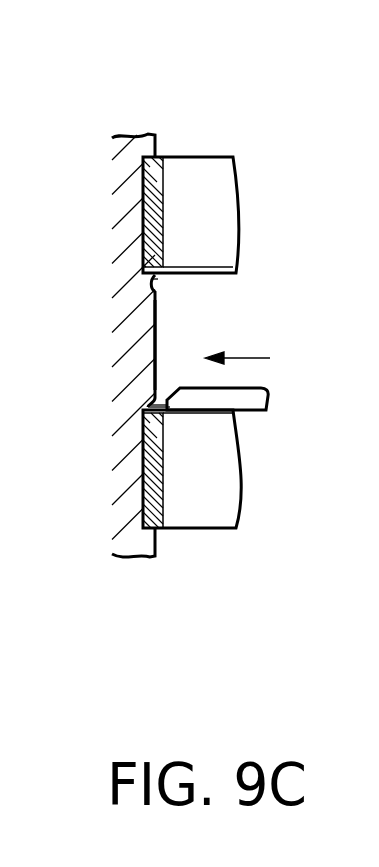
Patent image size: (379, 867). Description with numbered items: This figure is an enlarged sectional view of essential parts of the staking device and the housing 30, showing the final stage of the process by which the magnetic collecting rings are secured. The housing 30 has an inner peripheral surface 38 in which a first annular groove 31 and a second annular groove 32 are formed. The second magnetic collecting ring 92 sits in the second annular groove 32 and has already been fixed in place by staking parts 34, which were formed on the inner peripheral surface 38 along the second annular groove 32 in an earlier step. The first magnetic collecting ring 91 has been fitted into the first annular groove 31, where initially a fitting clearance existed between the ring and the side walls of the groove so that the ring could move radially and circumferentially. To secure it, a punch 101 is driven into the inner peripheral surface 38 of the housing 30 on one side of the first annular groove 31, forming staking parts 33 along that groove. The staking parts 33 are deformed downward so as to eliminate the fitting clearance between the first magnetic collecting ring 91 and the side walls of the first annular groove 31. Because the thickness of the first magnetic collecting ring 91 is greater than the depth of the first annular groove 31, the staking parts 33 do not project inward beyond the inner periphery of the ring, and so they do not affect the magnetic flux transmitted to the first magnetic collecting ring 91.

The housing 30 is at (133, 565).
The first annular groove 31 is at (150, 478).
The second annular groove 32 is at (152, 219).
The staking parts 33 is at (157, 405).
The staking parts 34 is at (153, 280).
The inner peripheral surface 38 is at (157, 333).
The first magnetic collecting ring 91 is at (222, 528).
The second magnetic collecting ring 92 is at (212, 155).
The punches 101 is at (258, 383).